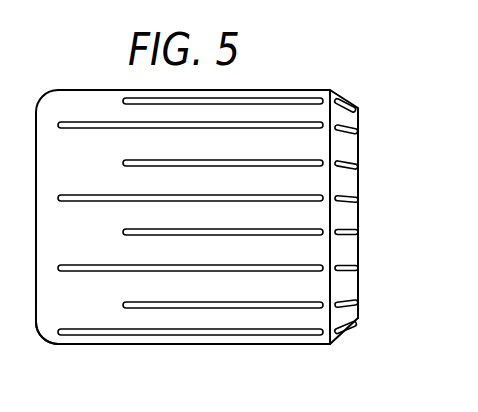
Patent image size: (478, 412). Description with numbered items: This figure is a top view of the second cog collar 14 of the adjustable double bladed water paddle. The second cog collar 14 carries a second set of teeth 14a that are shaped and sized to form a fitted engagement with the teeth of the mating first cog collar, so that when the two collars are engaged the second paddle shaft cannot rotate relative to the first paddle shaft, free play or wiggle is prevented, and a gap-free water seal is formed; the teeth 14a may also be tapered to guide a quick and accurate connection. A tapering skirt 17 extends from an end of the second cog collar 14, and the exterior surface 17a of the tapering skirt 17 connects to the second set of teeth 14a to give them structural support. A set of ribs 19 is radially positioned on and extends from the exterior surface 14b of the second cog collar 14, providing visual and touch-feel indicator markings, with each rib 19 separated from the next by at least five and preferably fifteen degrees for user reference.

The second cog collar 14 is at (356, 78).
The second set of teeth 14a is at (359, 163).
The exterior surface of second cog collar 14b is at (52, 316).
The tapering skirt 17 is at (359, 141).
The exterior surface of tapering skirt 17a is at (348, 281).
The set of ribs 19 is at (225, 235).